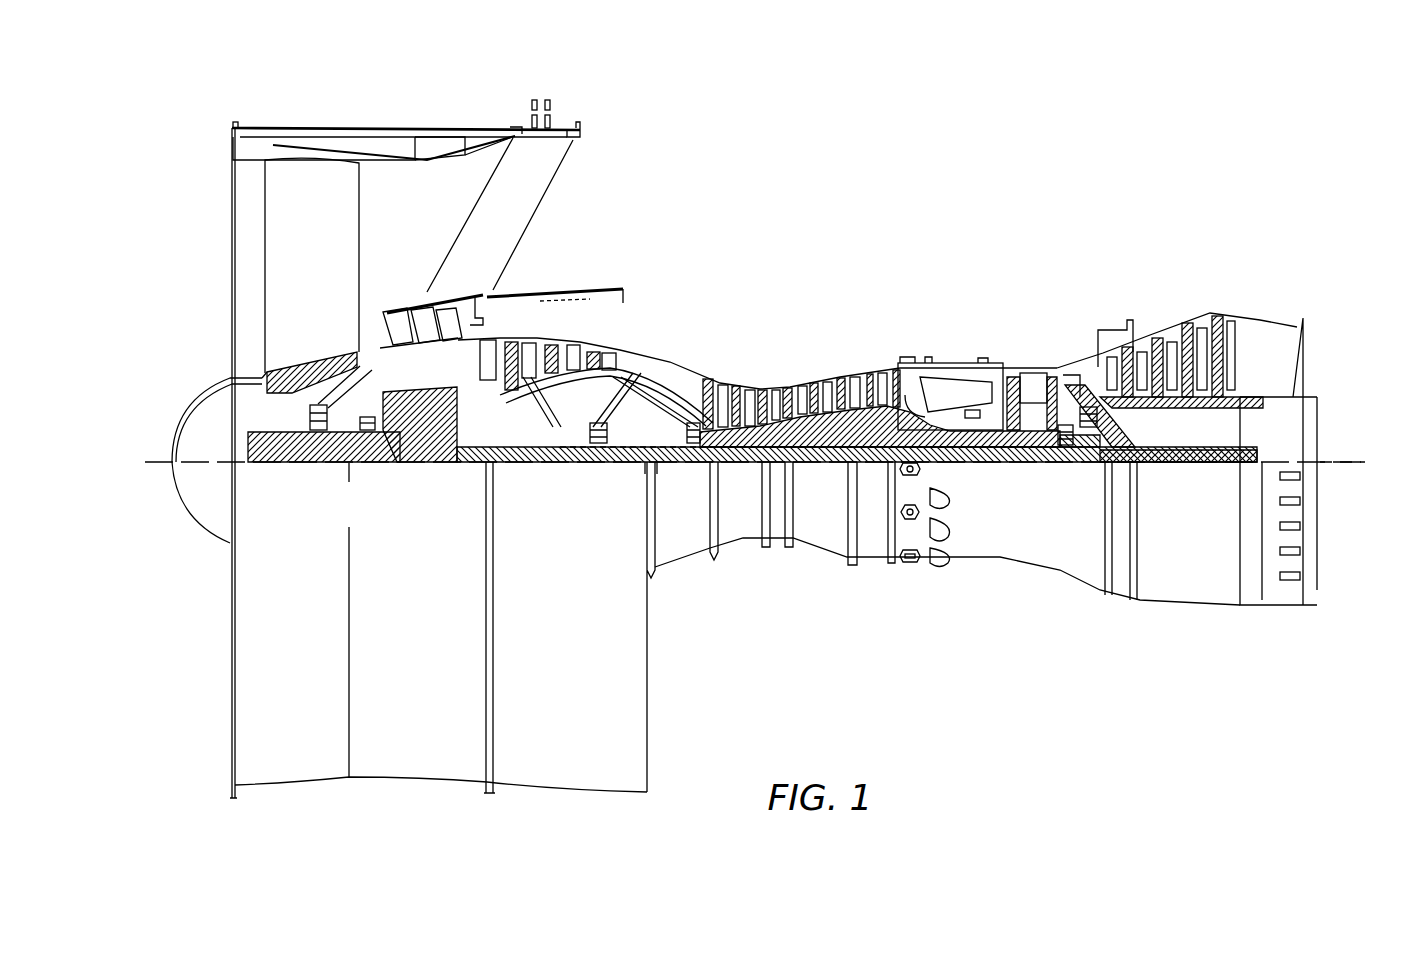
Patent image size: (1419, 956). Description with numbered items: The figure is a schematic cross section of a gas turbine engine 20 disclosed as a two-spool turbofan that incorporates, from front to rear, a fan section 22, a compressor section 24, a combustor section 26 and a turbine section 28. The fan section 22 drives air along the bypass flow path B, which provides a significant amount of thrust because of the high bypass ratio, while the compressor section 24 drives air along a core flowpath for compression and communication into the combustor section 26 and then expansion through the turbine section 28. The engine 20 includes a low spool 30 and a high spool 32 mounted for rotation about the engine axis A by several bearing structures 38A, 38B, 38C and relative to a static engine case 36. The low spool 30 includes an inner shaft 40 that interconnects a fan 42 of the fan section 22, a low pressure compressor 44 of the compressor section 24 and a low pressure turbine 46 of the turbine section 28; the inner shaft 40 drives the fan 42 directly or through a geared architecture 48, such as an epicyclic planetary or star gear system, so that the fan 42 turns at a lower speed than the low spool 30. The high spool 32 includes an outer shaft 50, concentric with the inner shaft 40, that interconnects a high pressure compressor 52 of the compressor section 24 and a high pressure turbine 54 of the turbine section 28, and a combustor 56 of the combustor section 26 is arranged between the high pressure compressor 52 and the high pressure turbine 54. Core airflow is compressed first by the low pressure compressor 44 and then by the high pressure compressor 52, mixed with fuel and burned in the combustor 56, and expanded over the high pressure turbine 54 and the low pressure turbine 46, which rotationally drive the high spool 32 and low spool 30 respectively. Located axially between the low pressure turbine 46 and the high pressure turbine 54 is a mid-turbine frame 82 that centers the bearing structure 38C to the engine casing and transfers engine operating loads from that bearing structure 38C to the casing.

The gas turbine engine 20 is at (990, 176).
The fan section 22 is at (223, 109).
The compressor section 24 is at (497, 264).
The combustor section 26 is at (900, 264).
The turbine section 28 is at (1240, 264).
The low spool 30 is at (828, 462).
The high spool 32 is at (867, 383).
The static engine case 36 is at (875, 558).
The bearing structure 38A is at (310, 480).
The bearing structure 38B is at (583, 470).
The bearing structure 38C is at (1100, 470).
The inner shaft 40 is at (750, 463).
The fan 42 is at (290, 290).
The low pressure compressor 44 is at (568, 353).
The low pressure turbine 46 is at (1180, 327).
The geared architecture 48 is at (439, 463).
The outer shaft 50 is at (963, 462).
The high pressure compressor 52 is at (808, 430).
The high pressure turbine 54 is at (1030, 368).
The combustor 56 is at (953, 400).
The mid-turbine frame 82 is at (1098, 411).
The engine axis A is at (1366, 458).
The bypass flow path B is at (320, 222).